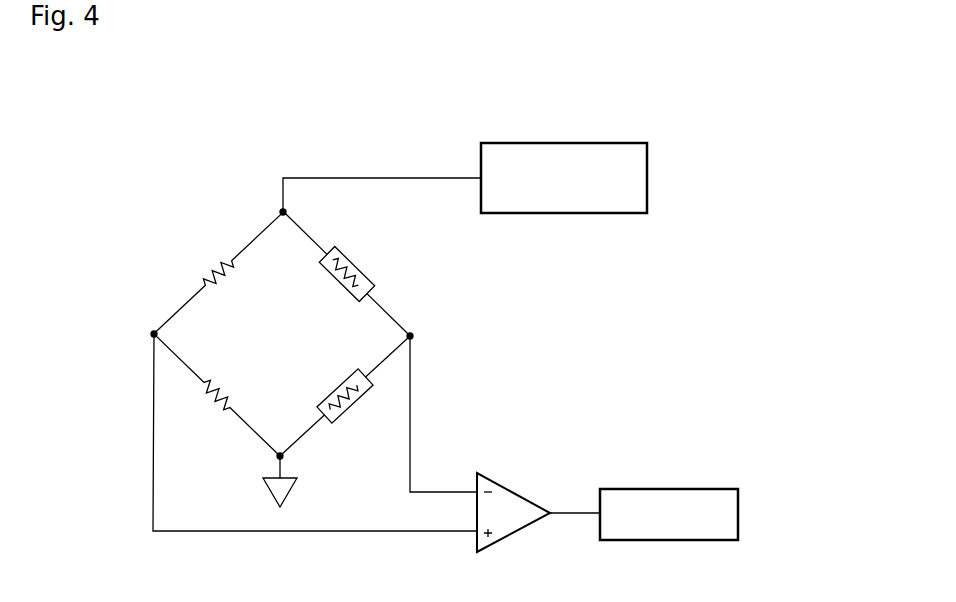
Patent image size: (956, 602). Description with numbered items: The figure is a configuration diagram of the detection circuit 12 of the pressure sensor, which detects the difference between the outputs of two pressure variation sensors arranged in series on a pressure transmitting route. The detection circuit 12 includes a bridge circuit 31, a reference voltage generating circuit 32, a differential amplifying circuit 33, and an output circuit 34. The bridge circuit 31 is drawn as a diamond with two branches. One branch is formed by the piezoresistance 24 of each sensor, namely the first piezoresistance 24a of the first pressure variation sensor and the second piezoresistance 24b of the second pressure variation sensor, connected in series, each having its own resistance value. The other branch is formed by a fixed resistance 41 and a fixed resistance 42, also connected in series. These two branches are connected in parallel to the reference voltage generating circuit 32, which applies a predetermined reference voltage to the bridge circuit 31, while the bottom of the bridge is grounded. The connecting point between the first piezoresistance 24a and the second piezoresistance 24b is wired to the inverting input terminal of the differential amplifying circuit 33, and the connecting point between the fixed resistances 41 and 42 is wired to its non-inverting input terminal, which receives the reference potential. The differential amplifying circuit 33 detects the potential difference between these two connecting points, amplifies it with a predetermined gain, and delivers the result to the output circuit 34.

The detection circuit 12 is at (742, 208).
The bridge circuit 31 is at (168, 278).
The fixed resistance 41 is at (226, 262).
The fixed resistance 42 is at (228, 408).
The piezoresistance 24 is at (396, 334).
The first piezoresistance 24a is at (372, 276).
The second piezoresistance 24b is at (362, 400).
The reference voltage generating circuit 32 is at (647, 181).
The differential amplifying circuit 33 is at (506, 483).
The output circuit 34 is at (667, 488).